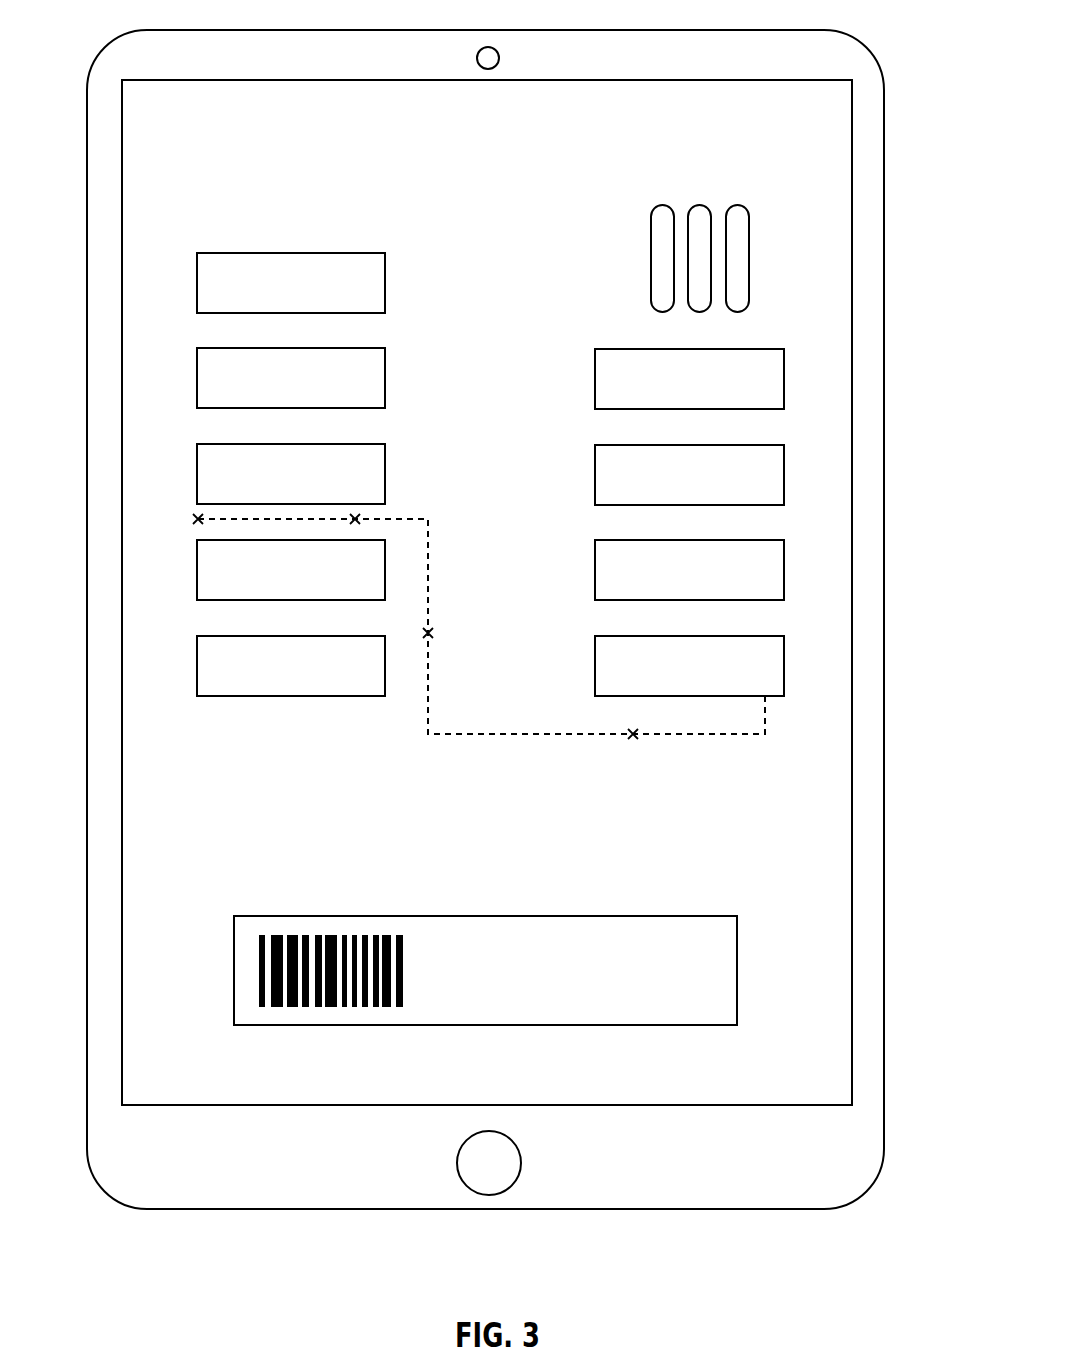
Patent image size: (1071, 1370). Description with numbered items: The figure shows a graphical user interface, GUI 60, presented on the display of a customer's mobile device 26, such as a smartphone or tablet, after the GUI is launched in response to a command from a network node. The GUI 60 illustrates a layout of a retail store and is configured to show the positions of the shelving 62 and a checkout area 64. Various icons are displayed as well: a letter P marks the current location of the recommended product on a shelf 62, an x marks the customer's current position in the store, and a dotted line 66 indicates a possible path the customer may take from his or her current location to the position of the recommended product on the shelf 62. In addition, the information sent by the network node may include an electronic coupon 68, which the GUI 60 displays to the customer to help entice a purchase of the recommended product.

The mobile device 26 is at (822, 31).
The GUI 60 is at (183, 139).
The shelving 62 is at (705, 675).
The checkout area 64 is at (742, 178).
The dotted line 66 is at (455, 736).
The electronic coupon 68 is at (693, 916).